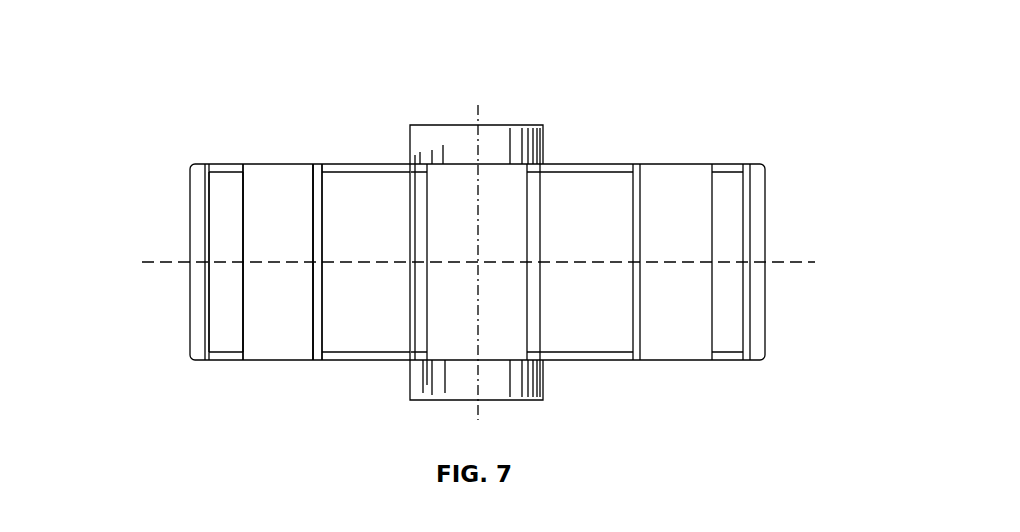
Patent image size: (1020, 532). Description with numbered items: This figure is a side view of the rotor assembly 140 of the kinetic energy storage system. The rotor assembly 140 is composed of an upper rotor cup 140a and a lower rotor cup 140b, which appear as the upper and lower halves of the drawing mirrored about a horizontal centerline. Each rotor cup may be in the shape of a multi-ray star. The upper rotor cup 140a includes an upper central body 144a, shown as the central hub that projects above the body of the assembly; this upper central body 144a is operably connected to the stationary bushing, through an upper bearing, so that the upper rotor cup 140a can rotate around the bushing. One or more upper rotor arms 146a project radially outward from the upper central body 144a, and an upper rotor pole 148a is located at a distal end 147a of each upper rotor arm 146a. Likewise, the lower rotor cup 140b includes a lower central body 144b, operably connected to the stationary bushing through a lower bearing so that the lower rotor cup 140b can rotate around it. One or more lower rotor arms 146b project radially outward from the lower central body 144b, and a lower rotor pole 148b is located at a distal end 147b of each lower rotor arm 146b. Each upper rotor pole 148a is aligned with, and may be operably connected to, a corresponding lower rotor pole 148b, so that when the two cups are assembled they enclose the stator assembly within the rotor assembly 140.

The rotor assembly 140 is at (156, 56).
The upper rotor cup 140a is at (166, 204).
The lower rotor cup 140b is at (166, 309).
The upper central body 144a is at (535, 147).
The lower central body 144b is at (535, 380).
The upper rotor arm 146a is at (224, 170).
The lower rotor arm 146b is at (222, 358).
The distal end of upper rotor arm 147a is at (298, 170).
The distal end of lower rotor arm 147b is at (297, 358).
The upper rotor pole 148a is at (277, 175).
The lower rotor pole 148b is at (287, 340).